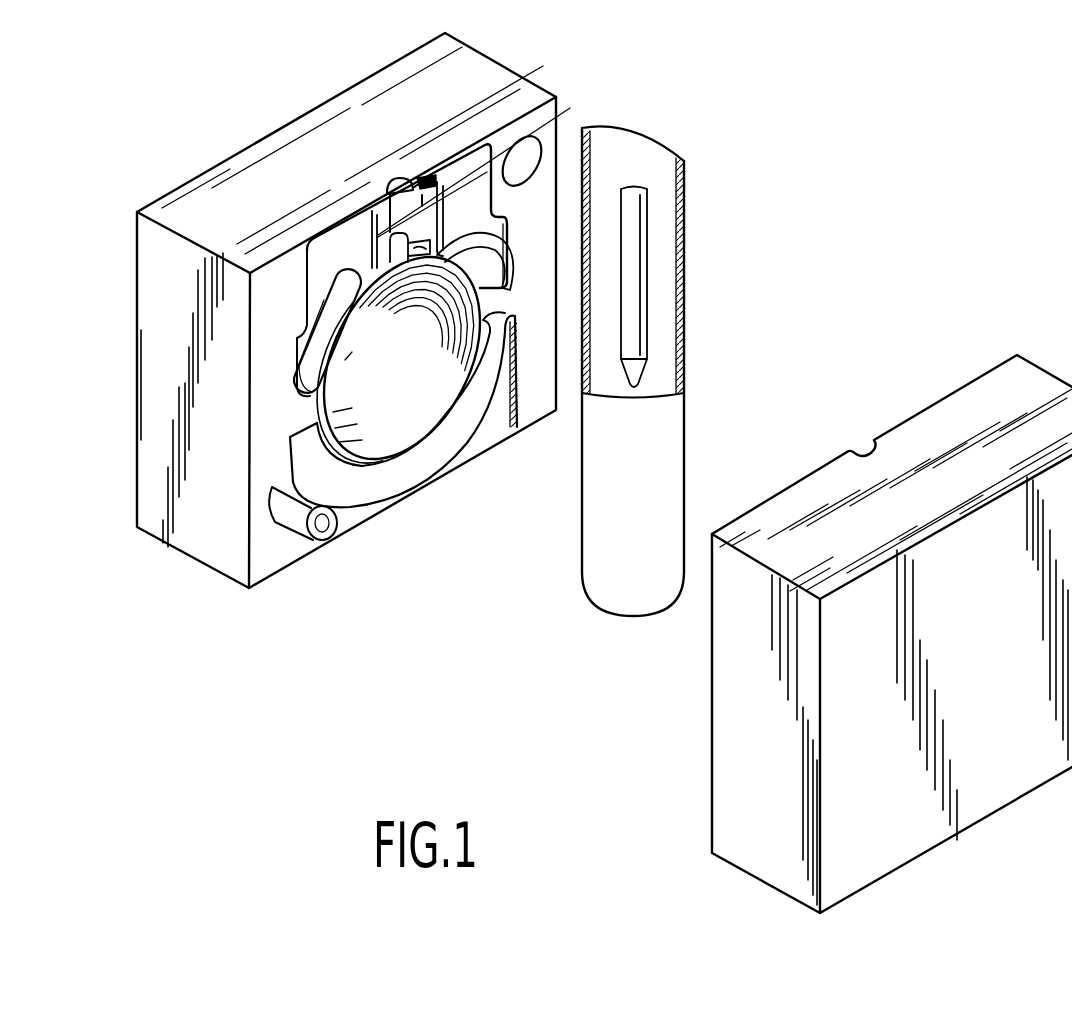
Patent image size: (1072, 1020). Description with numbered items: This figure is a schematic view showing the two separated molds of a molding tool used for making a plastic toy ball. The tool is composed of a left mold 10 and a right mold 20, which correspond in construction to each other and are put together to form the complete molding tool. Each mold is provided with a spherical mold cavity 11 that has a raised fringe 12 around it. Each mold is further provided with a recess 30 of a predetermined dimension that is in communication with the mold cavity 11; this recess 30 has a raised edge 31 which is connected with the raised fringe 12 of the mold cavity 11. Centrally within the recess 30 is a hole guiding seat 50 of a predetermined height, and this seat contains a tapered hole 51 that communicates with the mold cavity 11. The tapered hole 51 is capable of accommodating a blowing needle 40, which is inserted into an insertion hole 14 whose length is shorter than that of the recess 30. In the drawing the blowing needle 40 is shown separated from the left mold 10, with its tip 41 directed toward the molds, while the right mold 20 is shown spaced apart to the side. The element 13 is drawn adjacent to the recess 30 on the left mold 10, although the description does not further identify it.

The left mold 10 is at (202, 547).
The spherical mold cavity 11 is at (397, 420).
The raised fringe 12 is at (440, 410).
The oblong recess 13 is at (375, 202).
The insertion hole 14 is at (403, 180).
The right mold 20 is at (718, 740).
The recess 30 is at (422, 203).
The raised edge 31 is at (437, 178).
The blowing needle 40 is at (632, 248).
The pen tip 41 is at (636, 385).
The hole guiding seat 50 is at (551, 135).
The tapered hole 51 is at (498, 218).